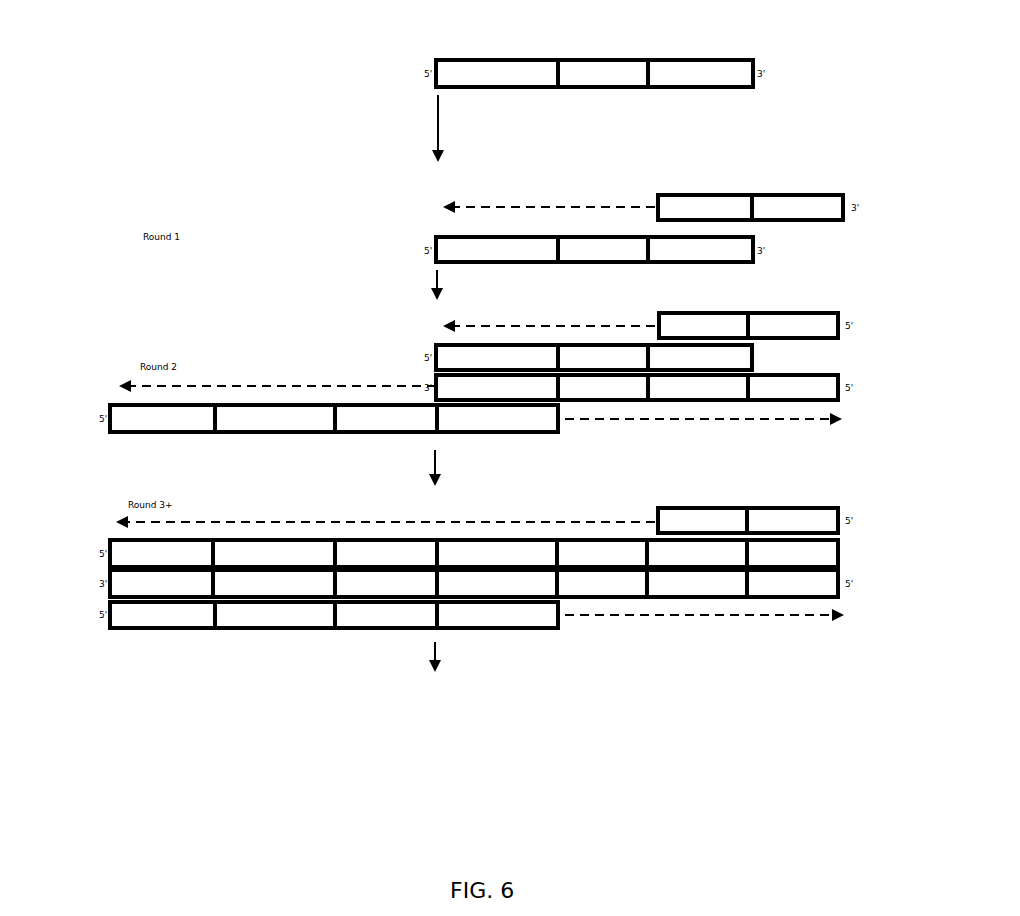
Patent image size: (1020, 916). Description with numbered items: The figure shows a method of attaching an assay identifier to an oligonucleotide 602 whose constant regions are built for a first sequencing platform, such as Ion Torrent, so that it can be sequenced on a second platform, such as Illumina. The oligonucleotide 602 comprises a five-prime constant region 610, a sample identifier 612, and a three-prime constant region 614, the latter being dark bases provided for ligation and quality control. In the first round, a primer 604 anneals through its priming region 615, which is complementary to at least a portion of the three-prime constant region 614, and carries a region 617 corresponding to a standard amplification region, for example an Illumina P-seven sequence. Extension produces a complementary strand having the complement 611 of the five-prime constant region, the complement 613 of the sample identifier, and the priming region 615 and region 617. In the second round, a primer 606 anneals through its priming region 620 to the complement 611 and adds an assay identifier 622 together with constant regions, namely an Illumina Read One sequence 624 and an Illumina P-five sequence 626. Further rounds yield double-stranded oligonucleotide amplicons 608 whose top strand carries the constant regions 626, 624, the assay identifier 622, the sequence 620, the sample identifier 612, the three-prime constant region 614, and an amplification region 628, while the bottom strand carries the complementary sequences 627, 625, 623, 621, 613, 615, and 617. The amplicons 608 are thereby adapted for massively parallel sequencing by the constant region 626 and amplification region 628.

The oligonucleotide 602 is at (776, 66).
The primer 604 is at (857, 195).
The primer 606 is at (91, 446).
The oligonucleotide amplicons 608 is at (859, 551).
The 5' constant region 610 is at (497, 215).
The complement of 5' constant region 611 is at (497, 387).
The sample identifier 612 is at (602, 313).
The complement of sample identifier 613 is at (602, 486).
The 3' constant region 614 is at (700, 313).
The priming region 615 is at (699, 396).
The region corresponding to a standard amplification region 617 is at (795, 396).
The priming region 620 is at (497, 516).
The complement of priming region 621 is at (497, 583).
The assay identifier 622 is at (386, 516).
The complement of assay identifier 623 is at (386, 583).
The Illumina Read 1 sequence 624 is at (274, 516).
The complement of Read 1 sequence 625 is at (274, 583).
The Illumina P5 sequence 626 is at (162, 516).
The complement of P5 sequence 627 is at (161, 583).
The amplification region 628 is at (792, 553).